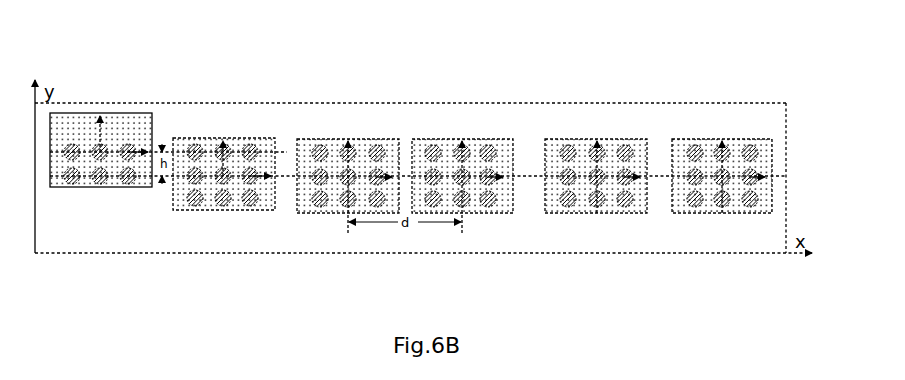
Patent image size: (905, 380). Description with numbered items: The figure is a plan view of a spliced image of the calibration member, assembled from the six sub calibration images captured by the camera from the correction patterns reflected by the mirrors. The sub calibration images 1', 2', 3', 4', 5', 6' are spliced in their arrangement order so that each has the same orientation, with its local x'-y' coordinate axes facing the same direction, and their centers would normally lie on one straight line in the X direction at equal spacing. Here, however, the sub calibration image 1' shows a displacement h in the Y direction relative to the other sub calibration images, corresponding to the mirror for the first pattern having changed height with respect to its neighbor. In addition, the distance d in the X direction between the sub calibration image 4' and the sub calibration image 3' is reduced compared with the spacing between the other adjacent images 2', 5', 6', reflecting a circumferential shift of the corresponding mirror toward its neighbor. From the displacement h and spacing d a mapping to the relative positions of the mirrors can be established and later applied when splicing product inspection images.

The sub calibration image 1' is at (101, 132).
The sub calibration image 2' is at (224, 144).
The sub calibration image 3' is at (348, 155).
The sub calibration image 4' is at (462, 155).
The sub calibration image 5' is at (596, 145).
The sub calibration image 6' is at (722, 145).